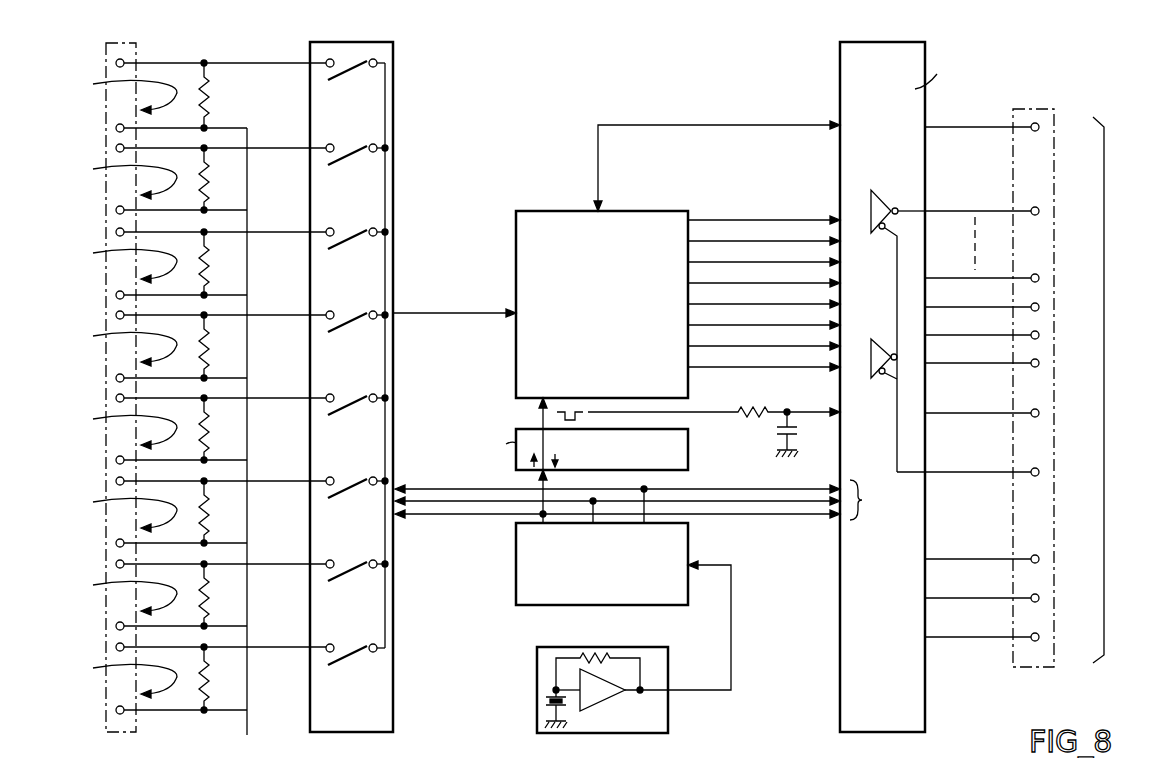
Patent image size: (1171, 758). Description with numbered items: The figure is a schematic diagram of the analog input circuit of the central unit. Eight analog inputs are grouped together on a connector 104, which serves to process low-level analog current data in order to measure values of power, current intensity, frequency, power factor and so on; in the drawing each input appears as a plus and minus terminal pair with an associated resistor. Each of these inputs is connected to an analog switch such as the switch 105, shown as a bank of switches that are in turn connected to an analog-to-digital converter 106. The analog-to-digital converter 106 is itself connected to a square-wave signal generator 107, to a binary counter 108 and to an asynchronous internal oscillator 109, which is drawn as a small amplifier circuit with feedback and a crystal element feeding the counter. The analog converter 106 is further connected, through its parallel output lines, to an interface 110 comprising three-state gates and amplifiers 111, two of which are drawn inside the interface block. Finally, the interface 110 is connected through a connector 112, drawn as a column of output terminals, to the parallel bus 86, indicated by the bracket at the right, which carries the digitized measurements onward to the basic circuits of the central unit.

The parallel bus 86 is at (1104, 390).
The connector 104 is at (118, 265).
The analog switch 105 is at (394, 288).
The analog-to-digital converter 106 is at (639, 224).
The square-wave signal generator 107 is at (689, 447).
The binary counter 108 is at (690, 542).
The asynchronous internal oscillator 109 is at (650, 712).
The interface 110 is at (908, 153).
The three-state gates and amplifiers 111 is at (872, 378).
The connector 112 is at (1037, 249).